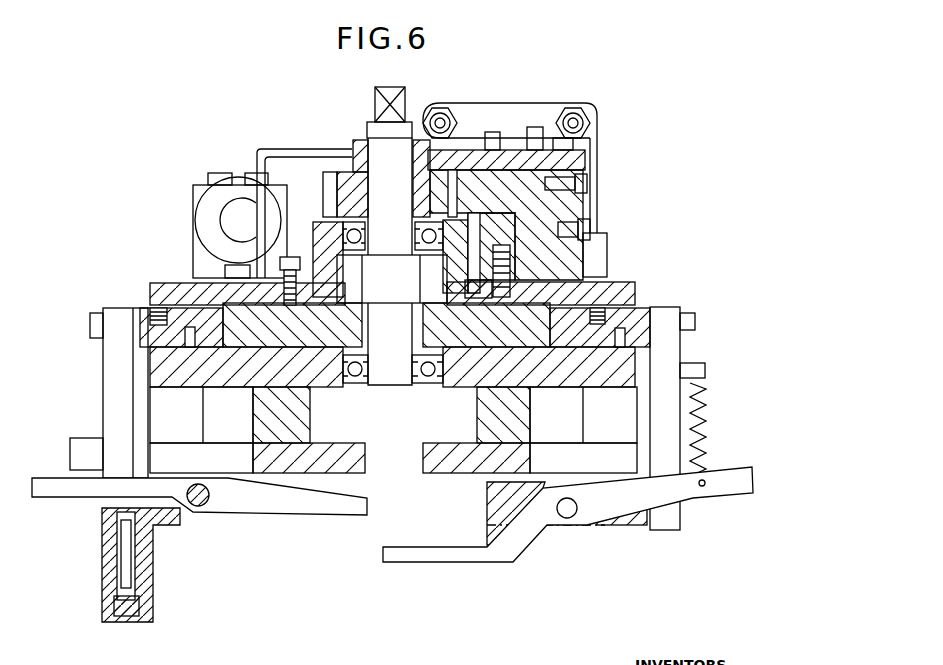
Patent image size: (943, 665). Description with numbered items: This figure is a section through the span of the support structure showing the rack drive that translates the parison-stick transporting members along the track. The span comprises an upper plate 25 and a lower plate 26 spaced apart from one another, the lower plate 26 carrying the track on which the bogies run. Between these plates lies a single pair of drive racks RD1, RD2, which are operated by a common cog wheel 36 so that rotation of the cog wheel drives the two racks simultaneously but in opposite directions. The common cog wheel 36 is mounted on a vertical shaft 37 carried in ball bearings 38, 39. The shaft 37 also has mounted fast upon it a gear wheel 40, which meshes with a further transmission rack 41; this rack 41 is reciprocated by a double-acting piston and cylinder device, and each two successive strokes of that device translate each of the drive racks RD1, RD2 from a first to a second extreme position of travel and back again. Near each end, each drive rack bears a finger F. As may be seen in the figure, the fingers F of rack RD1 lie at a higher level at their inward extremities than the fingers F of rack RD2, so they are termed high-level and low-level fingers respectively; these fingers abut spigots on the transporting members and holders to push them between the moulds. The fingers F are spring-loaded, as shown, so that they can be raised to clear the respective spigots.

The shaft 37 is at (404, 88).
The transmission rack 41 is at (472, 182).
The gear wheel 40 is at (337, 174).
The upper plate 25 is at (160, 286).
The drive rack RD1 is at (140, 307).
The drive rack RD2 is at (633, 308).
The lower plate 26 is at (620, 362).
The ball bearing 39 is at (423, 262).
The common cog wheel 36 is at (313, 330).
The ball bearing 38 is at (432, 382).
The finger F is at (264, 527).